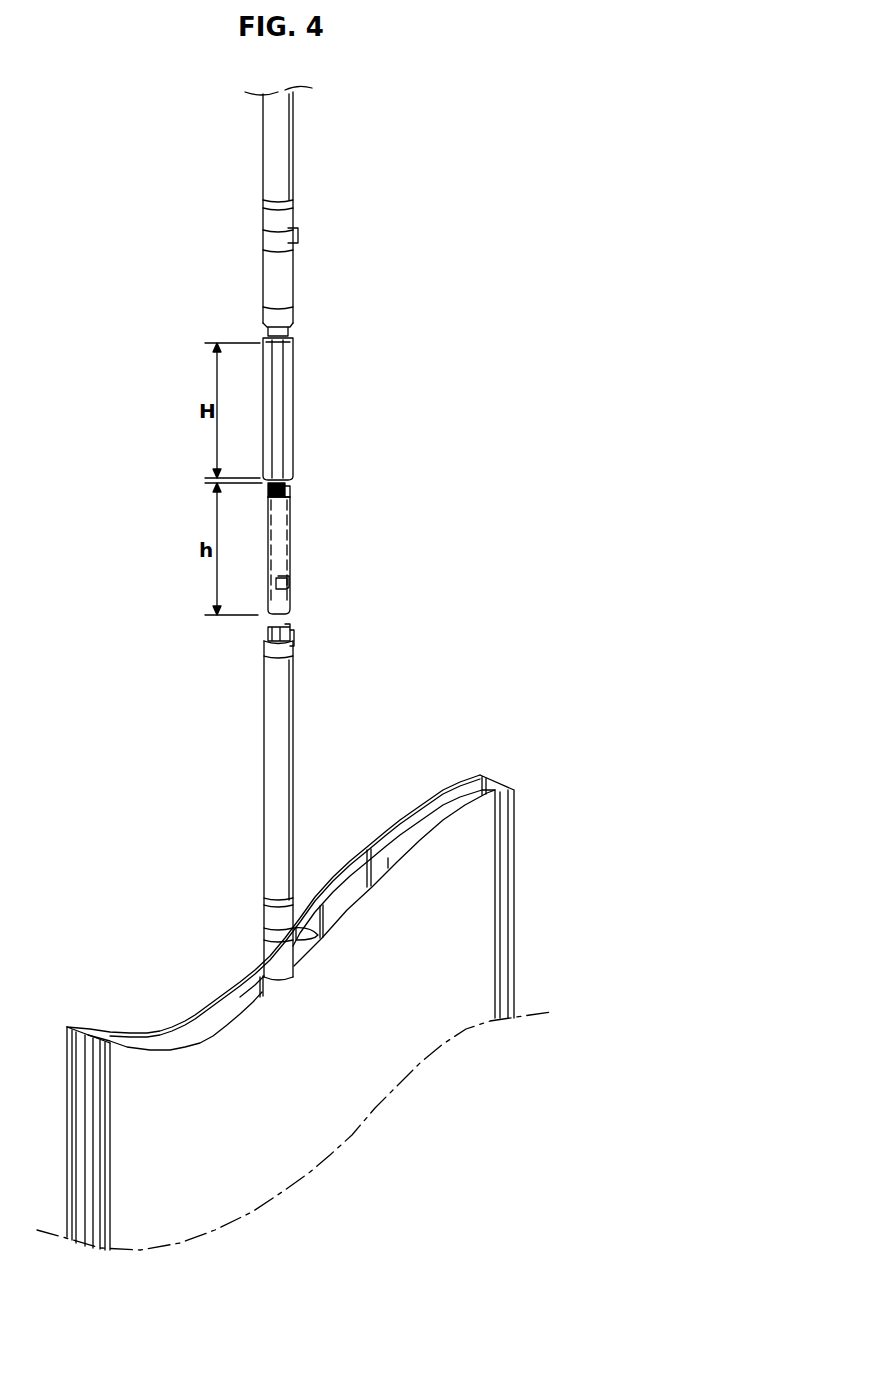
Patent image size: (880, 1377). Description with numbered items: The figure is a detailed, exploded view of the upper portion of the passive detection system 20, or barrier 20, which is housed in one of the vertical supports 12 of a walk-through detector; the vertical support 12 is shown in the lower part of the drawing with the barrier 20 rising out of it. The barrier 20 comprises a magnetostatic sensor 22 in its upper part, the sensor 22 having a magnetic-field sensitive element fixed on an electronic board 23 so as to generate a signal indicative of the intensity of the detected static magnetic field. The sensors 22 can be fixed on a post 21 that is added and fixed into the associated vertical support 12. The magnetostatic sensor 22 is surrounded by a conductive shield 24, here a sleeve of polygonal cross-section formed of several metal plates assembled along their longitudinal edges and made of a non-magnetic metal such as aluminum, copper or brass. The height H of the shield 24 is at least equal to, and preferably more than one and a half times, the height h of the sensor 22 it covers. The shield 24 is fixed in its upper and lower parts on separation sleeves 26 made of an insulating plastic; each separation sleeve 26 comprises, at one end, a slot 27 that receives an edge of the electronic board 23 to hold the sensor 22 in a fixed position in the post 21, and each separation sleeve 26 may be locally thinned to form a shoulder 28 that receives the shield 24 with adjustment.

The vertical support 12 is at (349, 1047).
The passive detection system 20 is at (372, 251).
The post 21 is at (283, 474).
The magnetostatic sensor 22 is at (289, 584).
The electronic board 23 is at (286, 538).
The conductive shield 24 is at (284, 408).
The separation sleeve 26 is at (283, 147).
The slot 27 is at (263, 627).
The shoulder 28 is at (296, 645).